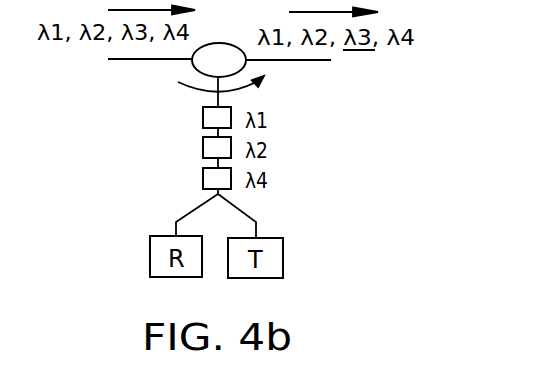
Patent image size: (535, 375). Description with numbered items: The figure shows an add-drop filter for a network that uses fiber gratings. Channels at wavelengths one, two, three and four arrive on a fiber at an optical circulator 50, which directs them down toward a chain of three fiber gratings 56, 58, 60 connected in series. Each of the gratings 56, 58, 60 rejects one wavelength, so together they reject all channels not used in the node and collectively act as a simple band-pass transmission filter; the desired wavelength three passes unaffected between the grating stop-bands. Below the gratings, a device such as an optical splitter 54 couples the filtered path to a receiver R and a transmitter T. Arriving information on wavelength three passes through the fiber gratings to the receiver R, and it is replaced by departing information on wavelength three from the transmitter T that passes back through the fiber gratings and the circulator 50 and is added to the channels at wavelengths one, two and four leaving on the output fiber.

The optical circulator 50 is at (218, 42).
The optical splitter 54 is at (195, 198).
The fiber grating 56 is at (203, 118).
The fiber grating 58 is at (203, 148).
The fiber grating 60 is at (203, 178).